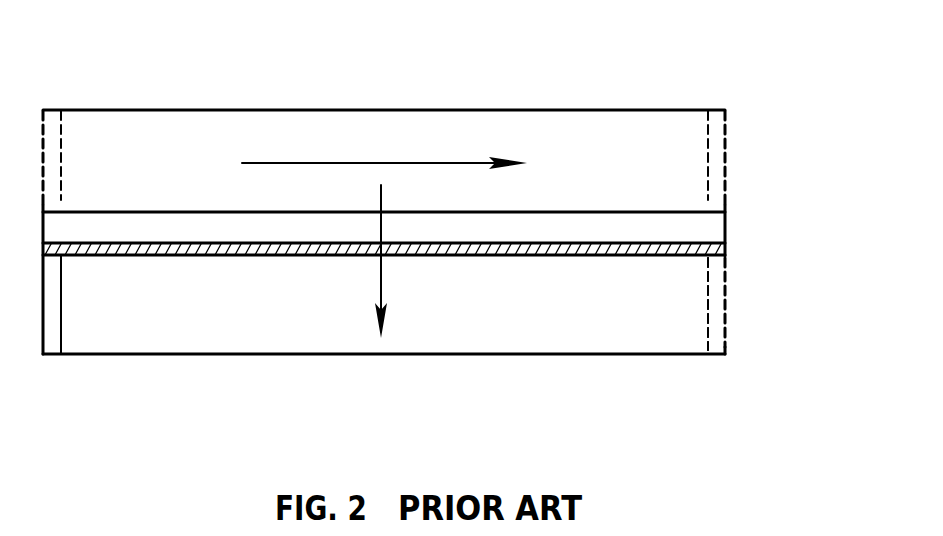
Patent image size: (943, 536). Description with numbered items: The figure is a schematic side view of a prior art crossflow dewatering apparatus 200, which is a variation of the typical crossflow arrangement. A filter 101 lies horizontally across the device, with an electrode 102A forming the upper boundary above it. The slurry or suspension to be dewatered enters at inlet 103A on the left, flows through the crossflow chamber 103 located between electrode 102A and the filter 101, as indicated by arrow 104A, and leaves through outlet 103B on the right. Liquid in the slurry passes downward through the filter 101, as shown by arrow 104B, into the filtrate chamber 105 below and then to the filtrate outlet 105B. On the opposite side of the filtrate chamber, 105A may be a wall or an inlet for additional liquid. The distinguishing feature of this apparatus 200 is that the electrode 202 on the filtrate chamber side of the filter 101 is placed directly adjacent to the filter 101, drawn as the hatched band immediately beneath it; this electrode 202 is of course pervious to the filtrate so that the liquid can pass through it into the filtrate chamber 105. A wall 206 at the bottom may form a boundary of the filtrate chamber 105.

The apparatus 200 is at (648, 98).
The electrode 102A is at (565, 108).
The wall 206 is at (630, 355).
The crossflow chamber 103 is at (616, 167).
The inlet 103A is at (61, 157).
The outlet 103B is at (726, 160).
The filter 101 is at (710, 232).
The electrode 202 is at (453, 256).
The filtrate chamber 105 is at (591, 316).
The wall or inlet 105A is at (61, 300).
The filtrate outlet 105B is at (726, 287).
The arrow 104A is at (373, 163).
The arrow 104B is at (379, 290).